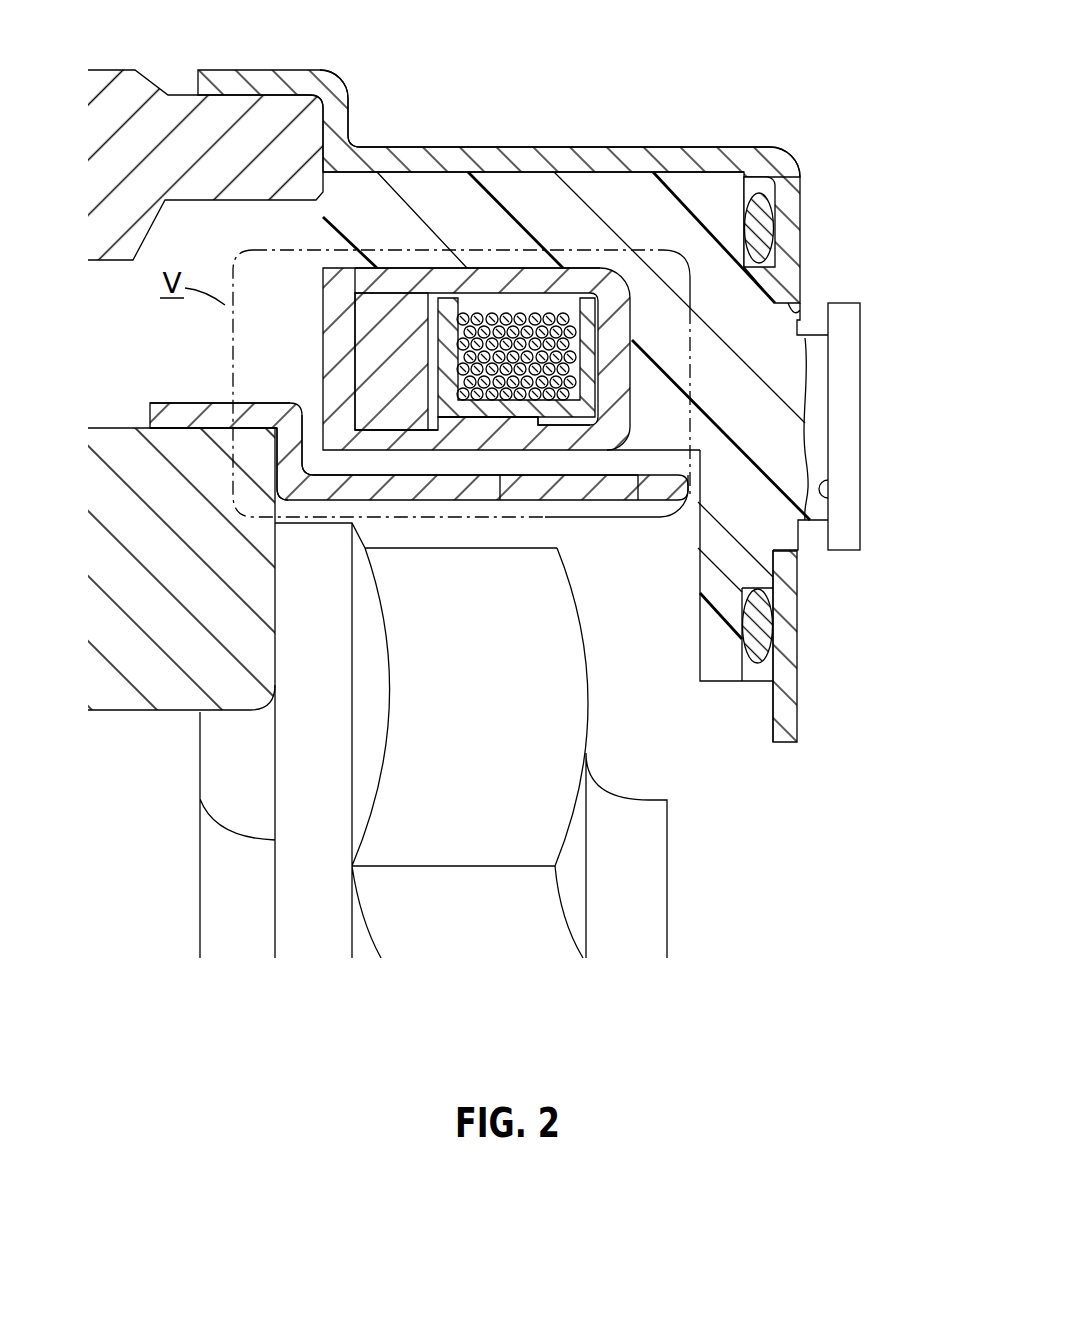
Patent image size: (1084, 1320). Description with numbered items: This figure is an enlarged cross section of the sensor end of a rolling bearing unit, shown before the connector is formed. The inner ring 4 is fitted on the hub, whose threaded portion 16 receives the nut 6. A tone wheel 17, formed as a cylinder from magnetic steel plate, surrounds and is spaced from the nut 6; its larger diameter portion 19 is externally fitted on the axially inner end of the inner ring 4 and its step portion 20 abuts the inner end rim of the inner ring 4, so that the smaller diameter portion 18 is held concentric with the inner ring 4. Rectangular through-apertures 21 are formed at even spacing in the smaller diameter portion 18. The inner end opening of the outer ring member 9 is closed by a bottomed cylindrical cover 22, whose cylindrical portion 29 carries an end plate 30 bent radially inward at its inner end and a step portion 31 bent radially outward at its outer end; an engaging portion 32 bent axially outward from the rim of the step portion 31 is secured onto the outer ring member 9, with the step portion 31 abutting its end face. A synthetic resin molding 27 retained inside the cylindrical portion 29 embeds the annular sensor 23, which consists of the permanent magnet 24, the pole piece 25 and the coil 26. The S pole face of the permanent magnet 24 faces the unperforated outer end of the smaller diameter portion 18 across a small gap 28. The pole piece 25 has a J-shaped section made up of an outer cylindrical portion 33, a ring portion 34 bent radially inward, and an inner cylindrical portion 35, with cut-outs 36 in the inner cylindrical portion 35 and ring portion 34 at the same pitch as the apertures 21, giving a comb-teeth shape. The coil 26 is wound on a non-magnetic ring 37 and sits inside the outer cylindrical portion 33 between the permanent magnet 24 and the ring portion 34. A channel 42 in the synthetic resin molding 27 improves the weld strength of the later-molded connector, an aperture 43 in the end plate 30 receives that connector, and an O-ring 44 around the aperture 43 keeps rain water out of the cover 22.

The inner ring 4 is at (162, 681).
The nut 6 is at (568, 802).
The outer ring member 9 is at (131, 107).
The threaded portion 16 is at (269, 904).
The tone wheel 17 is at (343, 492).
The smaller diameter portion 18 is at (473, 488).
The larger diameter portion 19 is at (207, 410).
The step portion 20 is at (280, 452).
The through-apertures 21 is at (538, 490).
The cover 22 is at (645, 155).
The sensor 23 is at (383, 347).
The permanent magnet 24 is at (417, 303).
The pole piece 25 is at (548, 272).
The coil 26 is at (548, 347).
The synthetic resin molding 27 is at (735, 160).
The small gap 28 is at (280, 480).
The cylindrical portion 29 is at (478, 278).
The end plate 30 is at (787, 230).
The step portion 31 is at (343, 113).
The engaging portion 32 is at (257, 77).
The outer cylindrical portion 33 is at (533, 277).
The ring portion 34 is at (593, 377).
The inner cylindrical portion 35 is at (563, 440).
The cut-outs 36 is at (583, 440).
The ring 37 is at (600, 382).
The channel 42 is at (828, 503).
The aperture 43 is at (812, 320).
The O-ring 44 is at (773, 639).